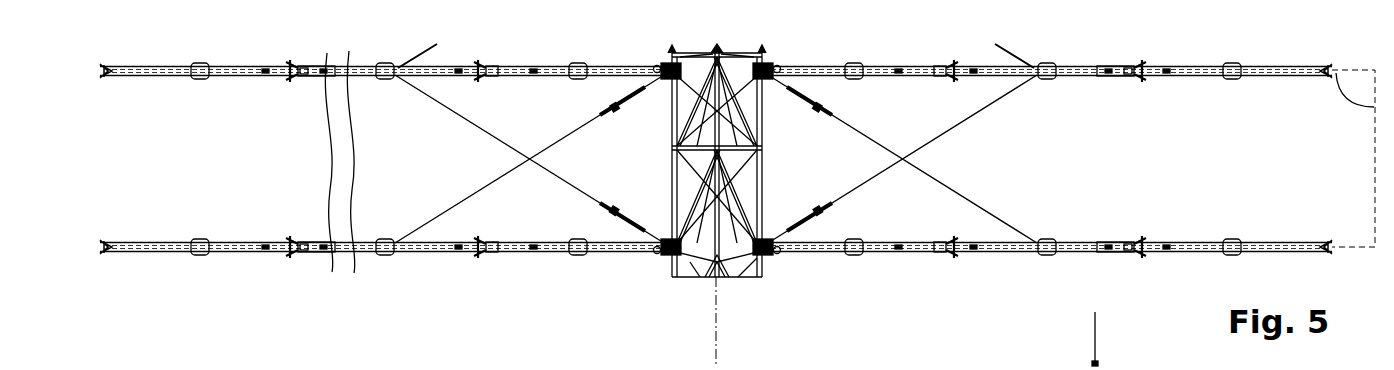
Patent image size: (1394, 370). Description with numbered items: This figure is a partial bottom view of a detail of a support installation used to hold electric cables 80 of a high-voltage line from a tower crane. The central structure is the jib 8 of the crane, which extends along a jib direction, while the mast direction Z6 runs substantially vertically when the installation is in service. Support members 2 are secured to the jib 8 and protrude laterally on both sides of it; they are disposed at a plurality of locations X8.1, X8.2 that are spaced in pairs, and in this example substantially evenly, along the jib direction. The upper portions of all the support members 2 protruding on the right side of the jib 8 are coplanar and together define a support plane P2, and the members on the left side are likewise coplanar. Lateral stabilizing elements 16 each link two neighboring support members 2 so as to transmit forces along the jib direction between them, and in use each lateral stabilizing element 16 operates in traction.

The support member 2 is at (278, 88).
The jib 8 is at (762, 113).
The lateral stabilizing element 16 is at (461, 201).
The electric cable 80 is at (338, 268).
The location X8.1 is at (661, 59).
The location X8.2 is at (661, 257).
The support plane P2 is at (1353, 158).
The mast direction Z6 is at (1096, 326).